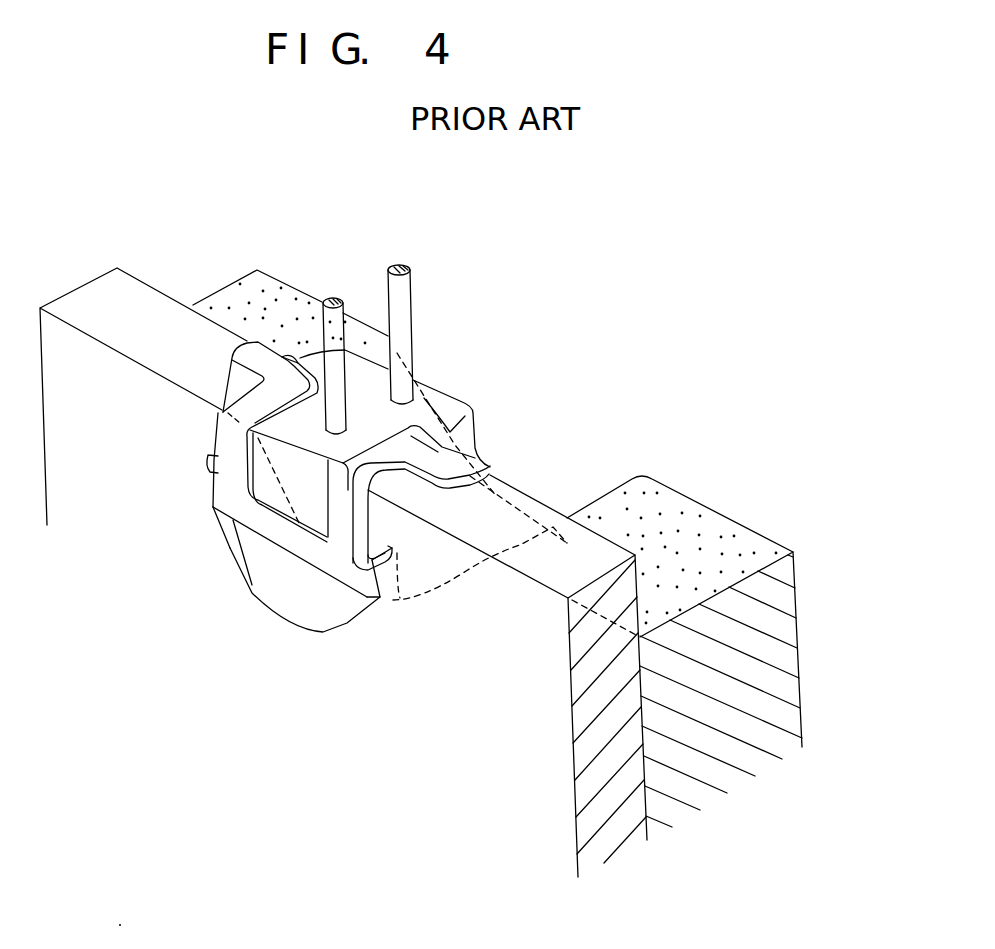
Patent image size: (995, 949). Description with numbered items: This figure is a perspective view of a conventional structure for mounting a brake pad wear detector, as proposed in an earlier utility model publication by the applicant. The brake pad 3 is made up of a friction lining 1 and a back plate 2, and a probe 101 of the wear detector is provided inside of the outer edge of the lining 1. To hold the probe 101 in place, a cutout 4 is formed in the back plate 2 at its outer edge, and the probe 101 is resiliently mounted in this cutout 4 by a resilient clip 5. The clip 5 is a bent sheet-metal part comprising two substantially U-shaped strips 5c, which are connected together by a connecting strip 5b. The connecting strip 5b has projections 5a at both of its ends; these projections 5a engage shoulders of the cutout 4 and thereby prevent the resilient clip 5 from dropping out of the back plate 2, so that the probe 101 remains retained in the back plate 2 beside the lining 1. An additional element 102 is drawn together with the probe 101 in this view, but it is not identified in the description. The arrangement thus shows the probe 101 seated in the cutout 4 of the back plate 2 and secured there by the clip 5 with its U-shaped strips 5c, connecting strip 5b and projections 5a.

The lining 1 is at (688, 518).
The back plate 2 is at (136, 318).
The brake pad 3 is at (196, 300).
The cutout 4 is at (229, 545).
The resilient clip 5 is at (212, 422).
The projections 5a is at (378, 582).
The connecting strip 5b is at (282, 532).
The U-shaped strips 5c is at (450, 455).
The probe 101 is at (417, 407).
The terminal pins 102 is at (400, 302).